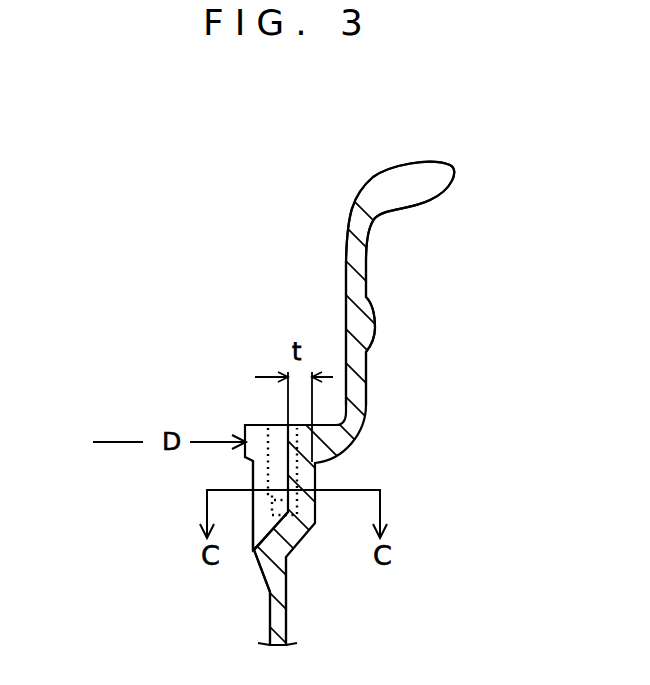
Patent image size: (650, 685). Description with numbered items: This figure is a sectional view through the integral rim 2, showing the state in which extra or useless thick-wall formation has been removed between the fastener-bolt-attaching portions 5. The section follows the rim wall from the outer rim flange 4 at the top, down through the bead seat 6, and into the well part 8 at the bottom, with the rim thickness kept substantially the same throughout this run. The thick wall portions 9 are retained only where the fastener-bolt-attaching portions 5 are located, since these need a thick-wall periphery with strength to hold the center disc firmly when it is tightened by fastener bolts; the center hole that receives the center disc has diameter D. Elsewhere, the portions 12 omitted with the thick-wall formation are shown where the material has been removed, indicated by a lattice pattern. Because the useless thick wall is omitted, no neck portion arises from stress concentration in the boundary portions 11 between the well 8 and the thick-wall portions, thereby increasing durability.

The integral rim 2 is at (300, 309).
The outer rim flange 4 is at (395, 178).
The fastener-bolt-attaching portion 5 is at (250, 410).
The bead seat 6 is at (370, 262).
The well part 8 is at (286, 617).
The thick wall portion 9 is at (222, 472).
The boundary portion 11 is at (256, 592).
The portion omitted with thick-wall formation 12 is at (253, 522).